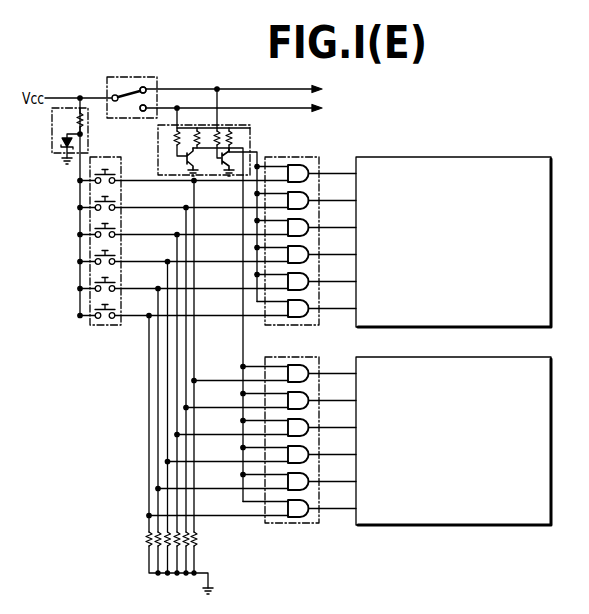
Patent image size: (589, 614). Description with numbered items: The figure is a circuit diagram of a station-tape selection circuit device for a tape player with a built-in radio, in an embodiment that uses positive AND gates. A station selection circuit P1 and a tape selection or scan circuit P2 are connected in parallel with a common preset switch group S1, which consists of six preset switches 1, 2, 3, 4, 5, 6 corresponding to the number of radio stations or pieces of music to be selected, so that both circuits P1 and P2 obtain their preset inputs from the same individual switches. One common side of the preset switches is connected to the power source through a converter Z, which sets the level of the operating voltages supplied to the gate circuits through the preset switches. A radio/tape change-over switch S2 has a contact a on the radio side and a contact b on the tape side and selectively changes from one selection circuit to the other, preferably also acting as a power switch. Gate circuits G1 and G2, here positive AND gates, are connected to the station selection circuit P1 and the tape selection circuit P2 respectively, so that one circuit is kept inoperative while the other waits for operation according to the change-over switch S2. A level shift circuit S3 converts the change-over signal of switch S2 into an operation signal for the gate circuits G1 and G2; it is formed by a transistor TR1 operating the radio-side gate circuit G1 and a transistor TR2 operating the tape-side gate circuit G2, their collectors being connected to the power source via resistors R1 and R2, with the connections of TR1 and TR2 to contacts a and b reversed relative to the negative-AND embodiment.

The preset switch 1 is at (98, 174).
The preset switch 2 is at (98, 201).
The preset switch 3 is at (98, 228).
The preset switch 4 is at (98, 255).
The preset switch 5 is at (98, 282).
The preset switch 6 is at (98, 309).
The converter Z is at (53, 126).
The preset switch group S1 is at (118, 158).
The station selection circuit/tape selection circuit change-over switch S2 is at (151, 81).
The shift circuit S3 is at (224, 294).
The contact a is at (141, 86).
The contact b is at (140, 110).
The resistor R1 is at (237, 141).
The resistor R2 is at (213, 138).
The transistor TR1 is at (182, 162).
The transistor TR2 is at (218, 162).
The gate circuit G1 is at (314, 160).
The gate circuit G2 is at (314, 360).
The station selection circuit P1 is at (453, 242).
The tape selection circuit P2 is at (453, 441).